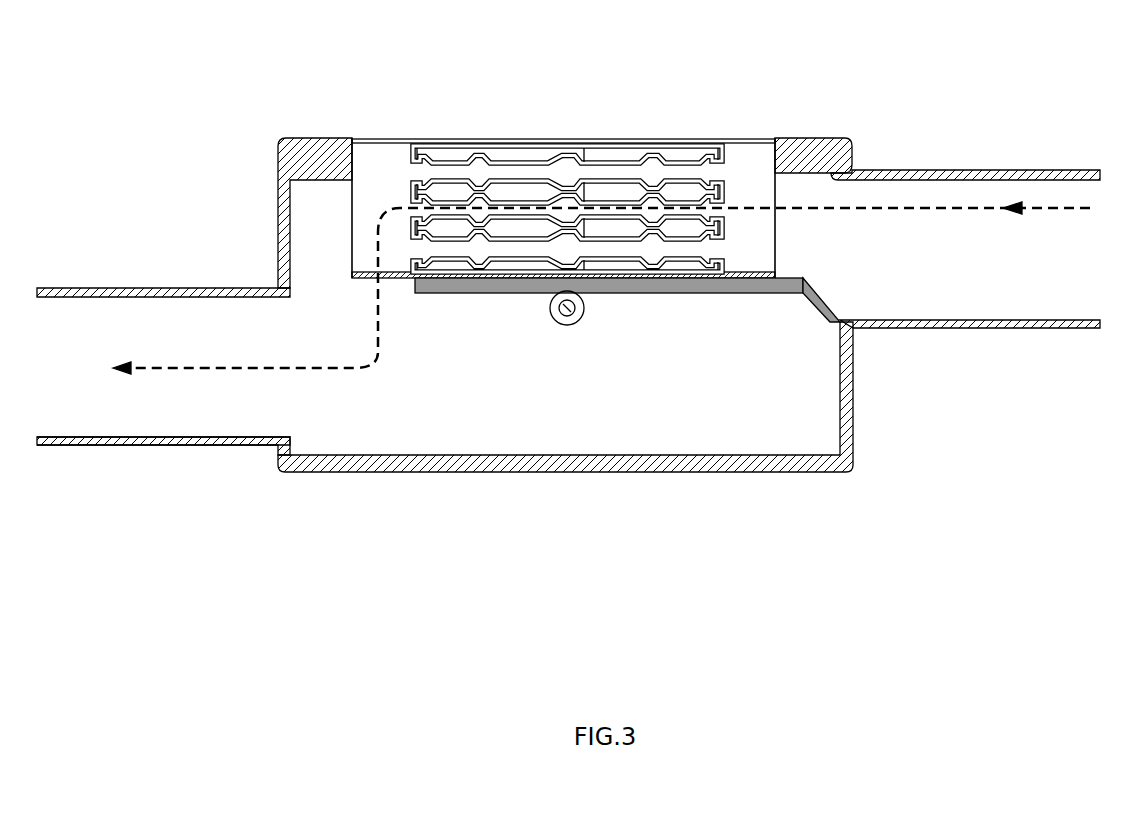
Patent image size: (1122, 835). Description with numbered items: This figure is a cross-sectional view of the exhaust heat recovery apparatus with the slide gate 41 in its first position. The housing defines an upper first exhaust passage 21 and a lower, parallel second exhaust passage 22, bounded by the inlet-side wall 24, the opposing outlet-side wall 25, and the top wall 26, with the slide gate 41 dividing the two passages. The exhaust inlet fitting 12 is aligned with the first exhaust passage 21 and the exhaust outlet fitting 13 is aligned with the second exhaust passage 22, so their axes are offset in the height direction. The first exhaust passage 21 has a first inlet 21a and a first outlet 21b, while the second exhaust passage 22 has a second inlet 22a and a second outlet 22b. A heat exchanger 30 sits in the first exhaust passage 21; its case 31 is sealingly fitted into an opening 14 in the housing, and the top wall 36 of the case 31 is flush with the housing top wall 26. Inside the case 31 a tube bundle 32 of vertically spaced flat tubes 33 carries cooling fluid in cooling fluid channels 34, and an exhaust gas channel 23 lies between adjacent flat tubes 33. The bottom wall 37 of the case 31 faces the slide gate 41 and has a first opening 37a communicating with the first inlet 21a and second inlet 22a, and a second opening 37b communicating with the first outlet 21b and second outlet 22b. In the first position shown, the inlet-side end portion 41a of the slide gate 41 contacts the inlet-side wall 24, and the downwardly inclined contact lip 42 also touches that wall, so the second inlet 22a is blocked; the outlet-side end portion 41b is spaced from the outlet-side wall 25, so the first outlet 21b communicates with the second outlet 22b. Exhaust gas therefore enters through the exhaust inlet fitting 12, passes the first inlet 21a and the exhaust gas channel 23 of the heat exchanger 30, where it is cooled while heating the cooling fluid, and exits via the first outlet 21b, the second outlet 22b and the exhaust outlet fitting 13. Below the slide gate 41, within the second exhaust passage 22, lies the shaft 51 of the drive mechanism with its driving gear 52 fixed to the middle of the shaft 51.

The exhaust inlet fitting 12 is at (998, 169).
The exhaust outlet fitting 13 is at (125, 446).
The opening 14 is at (352, 137).
The first exhaust passage 21 is at (778, 188).
The first inlet 21a is at (787, 243).
The first outlet 21b is at (304, 241).
The second exhaust passage 22 is at (550, 420).
The second inlet 22a is at (782, 420).
The second outlet 22b is at (304, 420).
The exhaust gas channel 23 is at (618, 170).
The inlet-side wall 24 is at (855, 158).
The outlet-side wall 25 is at (278, 186).
The top wall 26 is at (295, 137).
The heat exchanger 30 is at (593, 76).
The case 31 is at (694, 134).
The tube bundle 32 is at (728, 188).
The flat tubes 33 is at (413, 263).
The cooling fluid channel 34 is at (505, 154).
The top wall 36 is at (445, 139).
The bottom wall 37 is at (455, 283).
The first opening 37a is at (764, 273).
The second opening 37b is at (368, 281).
The slide gate 41 is at (513, 287).
The inlet-side end portion 41a is at (845, 298).
The outlet-side end portion 41b is at (427, 302).
The contact lip 42 is at (815, 301).
The shaft 51 is at (572, 324).
The driving gear 52 is at (559, 321).